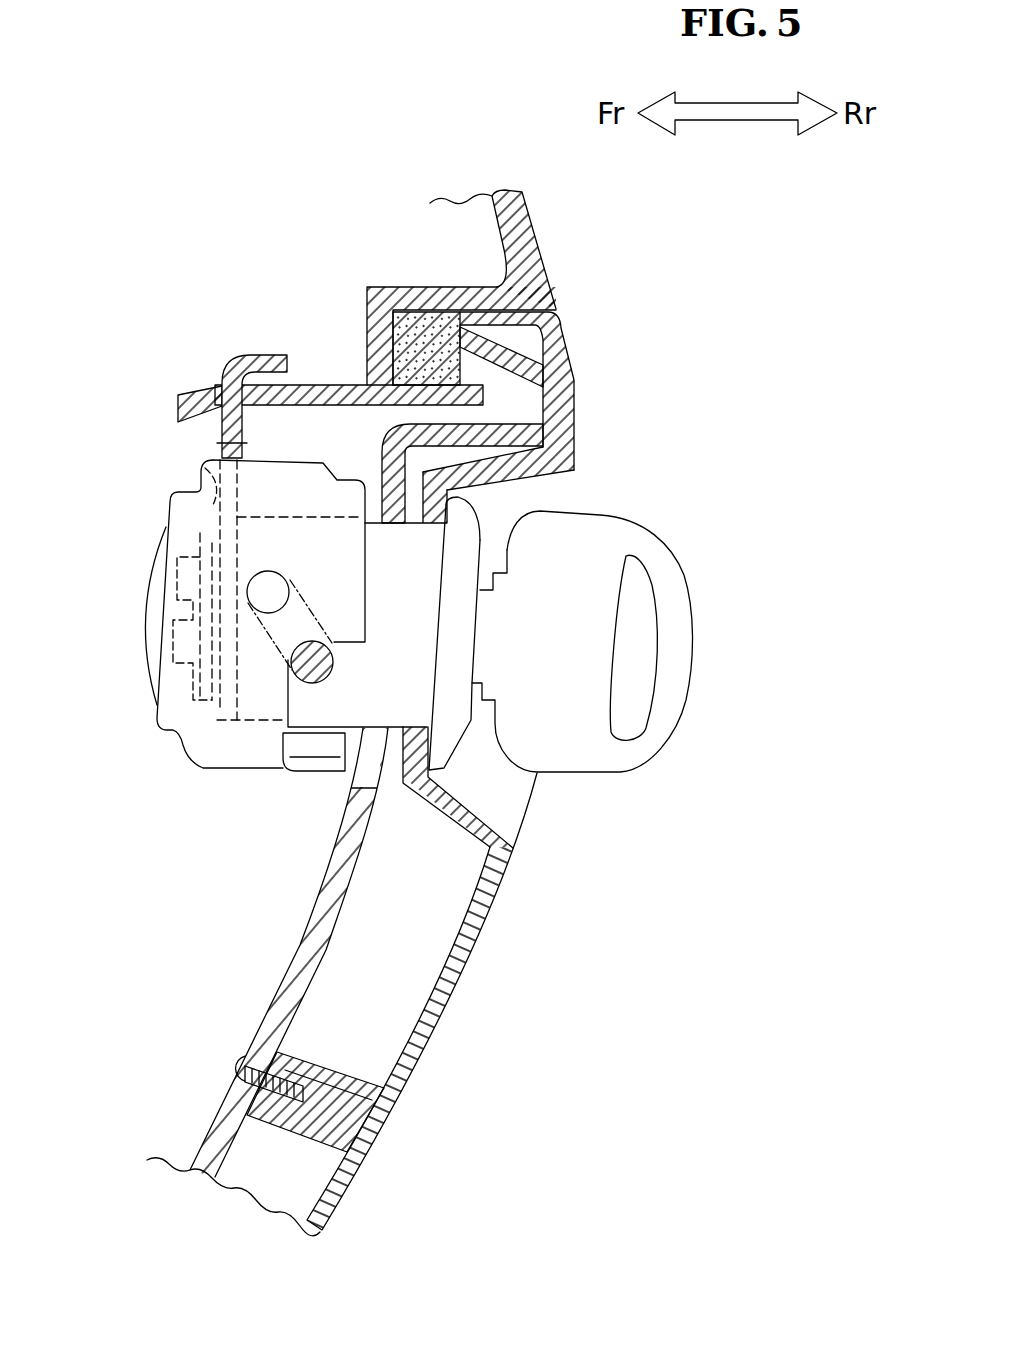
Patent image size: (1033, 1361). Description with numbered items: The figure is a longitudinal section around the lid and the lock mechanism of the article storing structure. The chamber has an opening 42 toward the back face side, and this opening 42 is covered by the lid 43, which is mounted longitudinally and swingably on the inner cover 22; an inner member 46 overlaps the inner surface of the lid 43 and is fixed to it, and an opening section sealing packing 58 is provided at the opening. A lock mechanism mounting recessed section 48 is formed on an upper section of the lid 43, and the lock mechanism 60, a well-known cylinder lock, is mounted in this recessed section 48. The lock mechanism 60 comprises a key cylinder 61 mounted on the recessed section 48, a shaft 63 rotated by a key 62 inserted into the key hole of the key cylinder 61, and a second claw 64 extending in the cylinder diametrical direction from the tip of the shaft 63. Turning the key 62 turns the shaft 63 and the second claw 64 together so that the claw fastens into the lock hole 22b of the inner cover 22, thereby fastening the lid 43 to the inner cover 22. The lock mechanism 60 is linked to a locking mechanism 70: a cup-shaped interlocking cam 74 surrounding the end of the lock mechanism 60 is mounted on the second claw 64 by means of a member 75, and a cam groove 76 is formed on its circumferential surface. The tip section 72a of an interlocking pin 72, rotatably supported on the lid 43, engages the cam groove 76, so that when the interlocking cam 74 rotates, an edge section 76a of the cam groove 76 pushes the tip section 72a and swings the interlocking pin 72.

The inner cover 22 is at (563, 228).
The lock hole 22b is at (227, 382).
The opening 42 is at (565, 348).
The lid 43 is at (596, 404).
The inner member 46 is at (270, 1022).
The lock mechanism mounting recessed section 48 is at (477, 803).
The opening section sealing packing 58 is at (423, 327).
The lock mechanism 60 is at (510, 518).
The key cylinder 61 is at (422, 603).
The key 62 is at (690, 622).
The shaft 63 is at (212, 533).
The second claw 64 is at (253, 353).
The locking mechanism 70 is at (166, 771).
The interlocking pin 72 is at (257, 607).
The tip section 72a is at (337, 637).
The interlocking cam 74 is at (172, 703).
The retainer 75 is at (200, 487).
The cam groove 76 is at (297, 711).
The edge section 76a is at (354, 626).